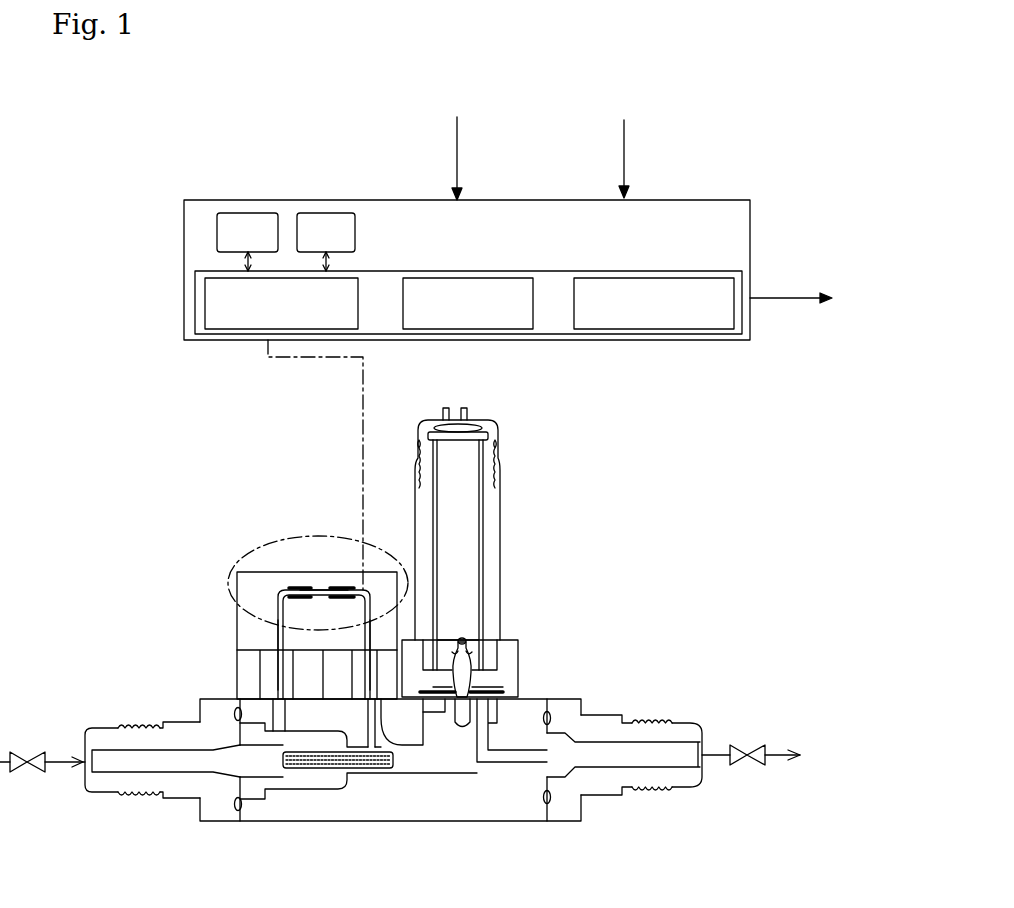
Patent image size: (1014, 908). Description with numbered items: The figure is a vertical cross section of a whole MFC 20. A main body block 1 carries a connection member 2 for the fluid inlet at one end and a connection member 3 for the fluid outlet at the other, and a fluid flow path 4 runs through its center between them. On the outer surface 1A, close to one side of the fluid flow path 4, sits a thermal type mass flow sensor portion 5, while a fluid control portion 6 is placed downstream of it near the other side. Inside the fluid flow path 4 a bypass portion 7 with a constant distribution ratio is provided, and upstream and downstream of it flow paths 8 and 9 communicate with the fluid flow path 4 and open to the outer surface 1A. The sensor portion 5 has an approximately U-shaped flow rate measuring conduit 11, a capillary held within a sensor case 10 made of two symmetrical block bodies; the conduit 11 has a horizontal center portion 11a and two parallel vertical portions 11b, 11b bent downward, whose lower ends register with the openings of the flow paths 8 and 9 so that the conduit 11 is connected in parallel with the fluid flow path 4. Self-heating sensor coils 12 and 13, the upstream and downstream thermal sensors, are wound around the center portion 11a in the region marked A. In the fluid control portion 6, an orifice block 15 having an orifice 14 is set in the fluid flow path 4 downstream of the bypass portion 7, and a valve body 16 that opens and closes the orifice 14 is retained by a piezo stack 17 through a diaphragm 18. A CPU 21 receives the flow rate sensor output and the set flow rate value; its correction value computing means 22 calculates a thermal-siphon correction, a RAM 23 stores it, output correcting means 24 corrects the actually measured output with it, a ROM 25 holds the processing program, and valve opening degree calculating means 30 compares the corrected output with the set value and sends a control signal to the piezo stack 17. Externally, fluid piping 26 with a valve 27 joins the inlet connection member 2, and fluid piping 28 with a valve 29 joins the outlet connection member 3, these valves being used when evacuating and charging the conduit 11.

The main body block 1 is at (270, 822).
The outer surface 1A is at (577, 696).
The connection member 2 is at (133, 792).
The connection member 3 is at (649, 800).
The fluid flow path 4 is at (431, 740).
The thermal type mass flow sensor portion 5 is at (272, 580).
The fluid control portion 6 is at (503, 552).
The bypass portion 7 is at (310, 770).
The flow path 8 is at (265, 708).
The flow path 9 is at (401, 748).
The sensor case 10 is at (238, 572).
The flow rate measuring conduit 11 is at (280, 588).
The center portion 11a is at (324, 590).
The vertical portions 11b is at (395, 574).
The sensor coil 12 is at (300, 588).
The sensor coil 13 is at (350, 588).
The orifice 14 is at (452, 735).
The orifice block 15 is at (419, 735).
The valve body 16 is at (464, 658).
The piezo stack 17 is at (490, 527).
The diaphragm 18 is at (556, 695).
The MFC 20 is at (252, 497).
The CPU 21 is at (396, 200).
The correction value computing means 22 is at (226, 334).
The RAM 23 is at (238, 213).
The output correcting means 24 is at (453, 329).
The ROM 25 is at (321, 213).
The fluid piping 26 is at (4, 778).
The valve 27 is at (42, 770).
The fluid piping 28 is at (763, 767).
The valve 29 is at (735, 745).
The valve opening degree calculating means 30 is at (628, 329).
The sensor portion A is at (237, 578).